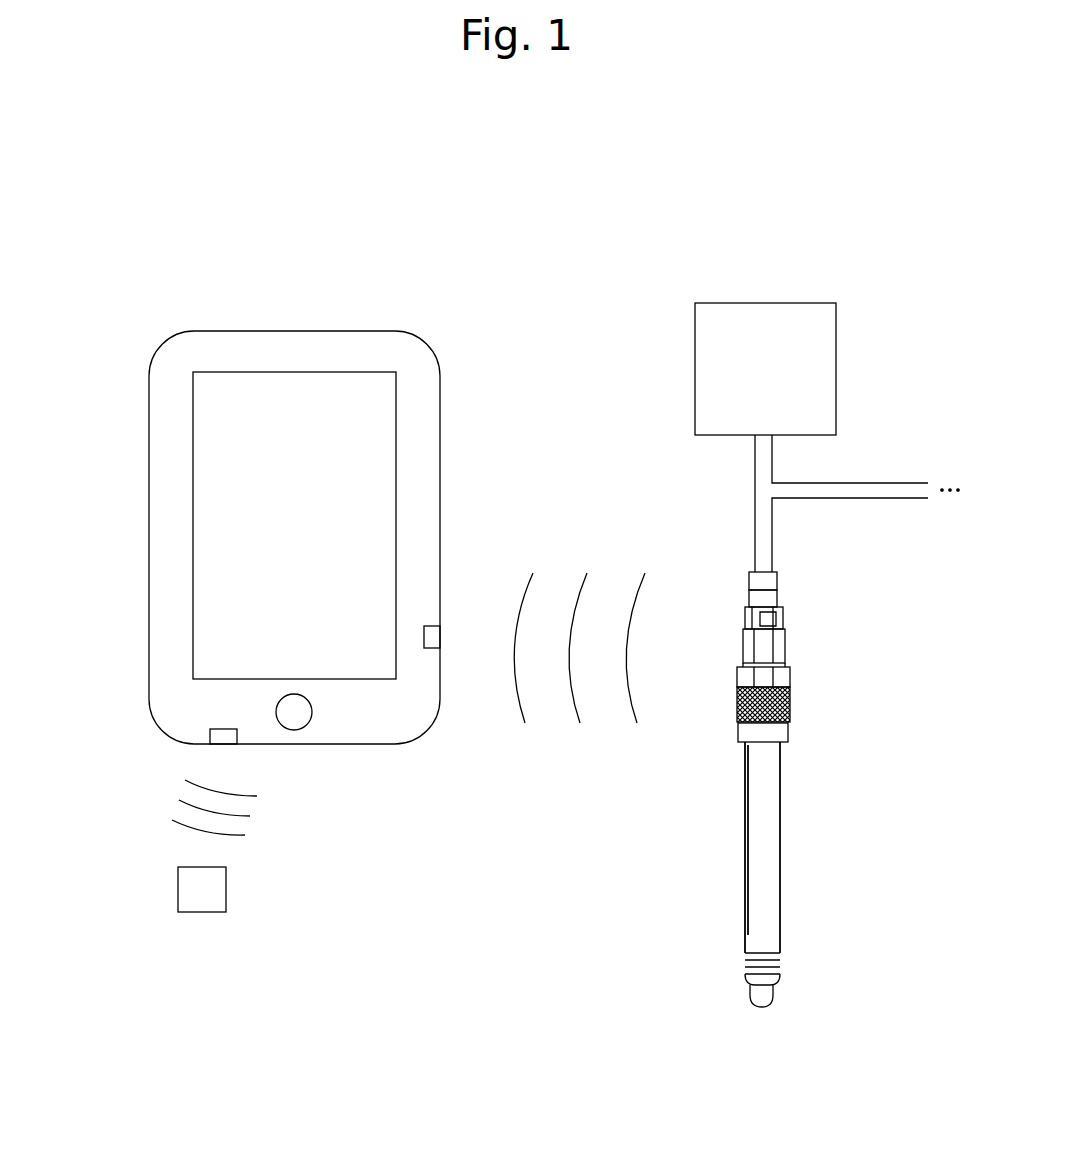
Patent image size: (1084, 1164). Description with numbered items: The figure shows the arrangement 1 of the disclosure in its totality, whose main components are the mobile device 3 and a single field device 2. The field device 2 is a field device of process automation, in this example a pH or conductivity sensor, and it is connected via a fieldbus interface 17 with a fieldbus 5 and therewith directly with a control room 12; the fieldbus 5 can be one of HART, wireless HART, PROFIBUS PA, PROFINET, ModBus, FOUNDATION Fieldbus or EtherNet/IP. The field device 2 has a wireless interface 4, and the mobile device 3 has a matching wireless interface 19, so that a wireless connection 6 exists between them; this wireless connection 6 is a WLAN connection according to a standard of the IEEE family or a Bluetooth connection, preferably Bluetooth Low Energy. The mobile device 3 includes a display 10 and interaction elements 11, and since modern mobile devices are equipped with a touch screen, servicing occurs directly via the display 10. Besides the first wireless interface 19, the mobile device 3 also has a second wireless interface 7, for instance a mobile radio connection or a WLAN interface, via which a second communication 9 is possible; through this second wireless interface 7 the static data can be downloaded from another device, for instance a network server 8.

The arrangement 1 is at (160, 205).
The field device 2 is at (762, 780).
The mobile device 3 is at (165, 412).
The wireless interface 4 is at (767, 599).
The fieldbus 5 is at (778, 506).
The wireless connection 6 is at (583, 772).
The second wireless interface 7 is at (220, 735).
The network server 8 is at (202, 889).
The second communication 9 is at (145, 803).
The display 10 is at (372, 417).
The interaction elements 11 is at (300, 712).
The control room 12 is at (793, 377).
The fieldbus interface 17 is at (767, 582).
The wireless interface 19 is at (432, 640).